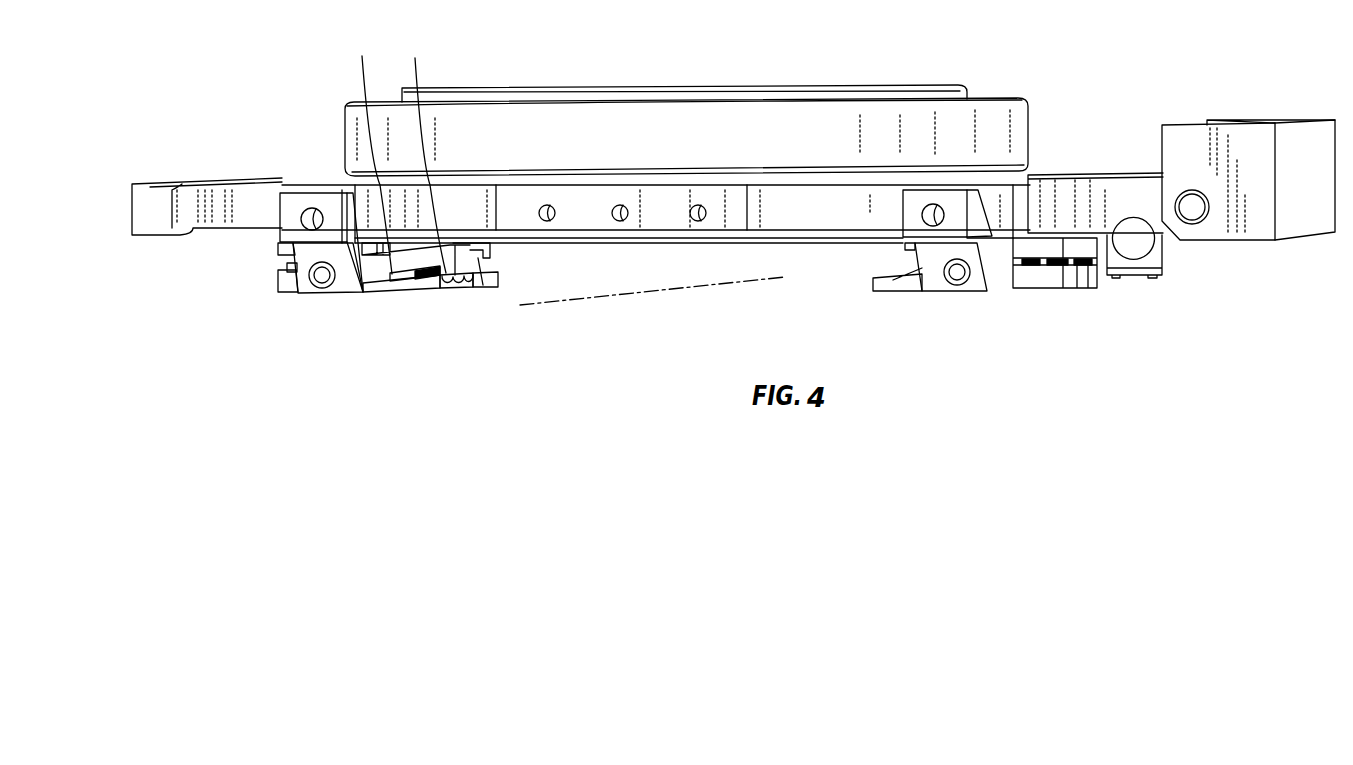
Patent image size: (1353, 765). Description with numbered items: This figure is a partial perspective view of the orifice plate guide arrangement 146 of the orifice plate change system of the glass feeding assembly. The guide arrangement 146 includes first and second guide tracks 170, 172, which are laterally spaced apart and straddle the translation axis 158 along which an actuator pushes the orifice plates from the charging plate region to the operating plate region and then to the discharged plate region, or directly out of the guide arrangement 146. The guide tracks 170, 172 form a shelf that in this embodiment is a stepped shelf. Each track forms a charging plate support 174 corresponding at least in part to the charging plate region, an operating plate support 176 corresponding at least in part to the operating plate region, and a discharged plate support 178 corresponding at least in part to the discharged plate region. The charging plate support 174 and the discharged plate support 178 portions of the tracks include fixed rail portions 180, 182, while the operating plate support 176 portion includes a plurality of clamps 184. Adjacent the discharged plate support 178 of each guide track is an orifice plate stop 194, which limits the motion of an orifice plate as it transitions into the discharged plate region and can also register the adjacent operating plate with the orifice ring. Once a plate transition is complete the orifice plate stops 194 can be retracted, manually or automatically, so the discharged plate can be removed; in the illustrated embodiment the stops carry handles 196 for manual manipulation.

The guide arrangement 146 is at (1081, 323).
The translation axis 158 is at (667, 292).
The first guide track 170 is at (293, 309).
The second guide track 172 is at (903, 316).
The charging plate support 174 is at (367, 150).
The operating plate support 176 is at (423, 151).
The discharged plate support 178 is at (490, 263).
The fixed rail portion 180 is at (424, 292).
The fixed rail portion 182 is at (500, 290).
The clamps 184 is at (463, 292).
The orifice plate stop 194 is at (483, 292).
The handle 196 is at (1135, 258).